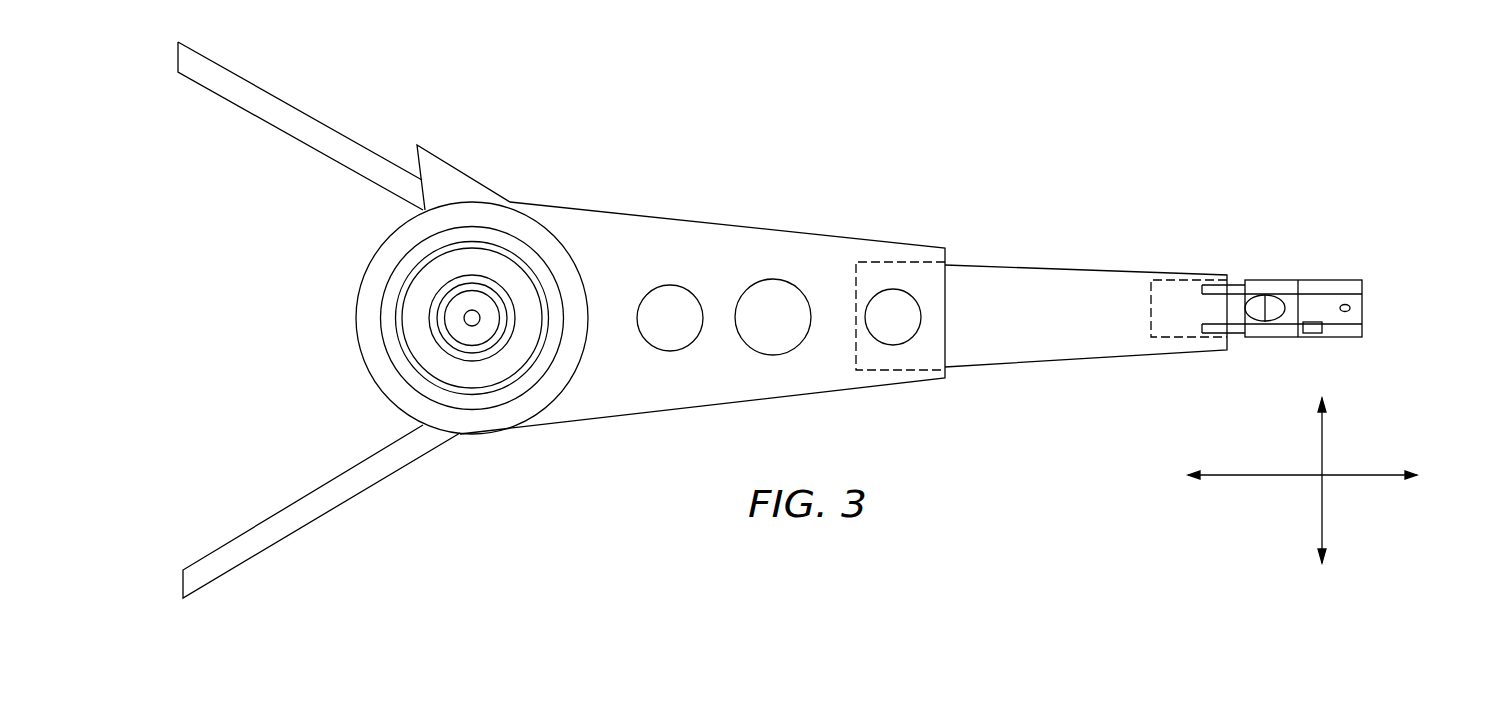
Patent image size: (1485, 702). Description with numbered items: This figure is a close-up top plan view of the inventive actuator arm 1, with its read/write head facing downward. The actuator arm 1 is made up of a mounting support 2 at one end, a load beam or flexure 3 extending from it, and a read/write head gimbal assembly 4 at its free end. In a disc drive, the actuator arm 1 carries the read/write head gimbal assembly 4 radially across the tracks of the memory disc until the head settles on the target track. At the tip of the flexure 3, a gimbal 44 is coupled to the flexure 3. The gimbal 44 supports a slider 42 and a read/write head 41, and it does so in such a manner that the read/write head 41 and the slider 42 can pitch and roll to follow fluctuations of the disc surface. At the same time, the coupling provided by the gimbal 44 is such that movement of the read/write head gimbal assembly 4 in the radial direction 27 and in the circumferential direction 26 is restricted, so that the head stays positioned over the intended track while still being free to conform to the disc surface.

The actuator arm 1 is at (873, 222).
The mounting support 2 is at (638, 213).
The load beam or flexure 3 is at (997, 265).
The read/write head gimbal assembly 4 is at (1312, 268).
The read/write head 41 is at (1320, 337).
The slider 42 is at (1362, 323).
The gimbal 44 is at (1168, 280).
The circumferential direction 26 is at (1237, 475).
The radial direction 27 is at (1322, 525).